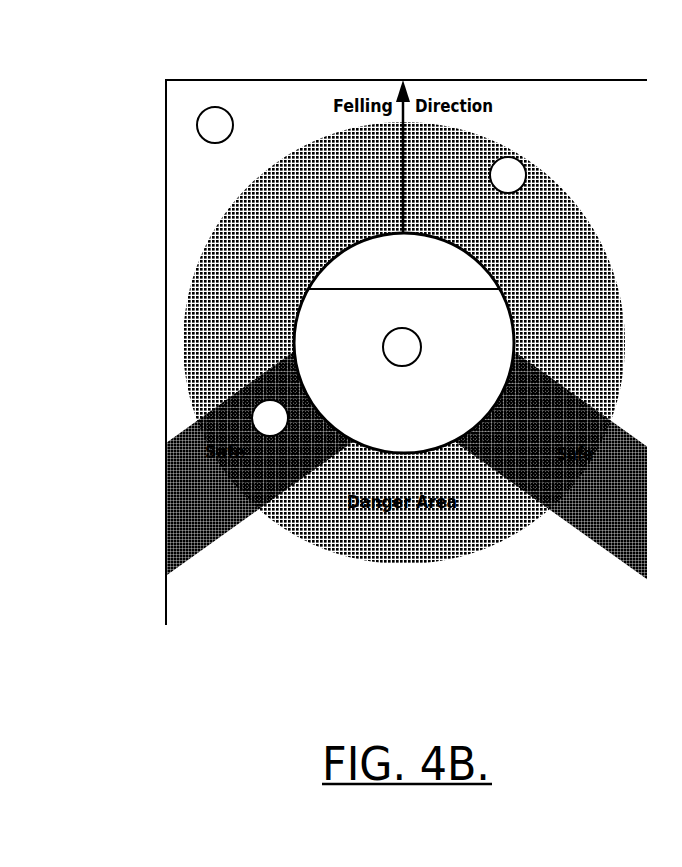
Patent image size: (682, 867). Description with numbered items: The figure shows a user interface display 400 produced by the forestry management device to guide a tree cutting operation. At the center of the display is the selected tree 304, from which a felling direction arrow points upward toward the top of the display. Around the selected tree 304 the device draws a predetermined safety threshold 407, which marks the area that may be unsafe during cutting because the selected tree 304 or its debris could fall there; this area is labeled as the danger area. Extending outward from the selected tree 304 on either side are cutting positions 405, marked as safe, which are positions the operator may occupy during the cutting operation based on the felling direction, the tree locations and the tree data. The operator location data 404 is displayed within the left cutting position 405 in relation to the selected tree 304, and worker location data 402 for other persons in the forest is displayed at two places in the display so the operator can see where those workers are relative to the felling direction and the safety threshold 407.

The user interface display 400 is at (406, 329).
The worker location data 402 is at (354, 116).
The predetermined safety threshold 407 is at (340, 343).
The selected tree 304 is at (238, 307).
The operator location data 404 is at (180, 388).
The cutting position 405 is at (233, 455).